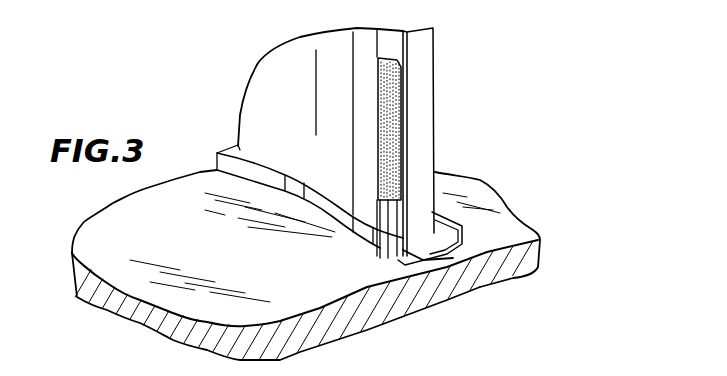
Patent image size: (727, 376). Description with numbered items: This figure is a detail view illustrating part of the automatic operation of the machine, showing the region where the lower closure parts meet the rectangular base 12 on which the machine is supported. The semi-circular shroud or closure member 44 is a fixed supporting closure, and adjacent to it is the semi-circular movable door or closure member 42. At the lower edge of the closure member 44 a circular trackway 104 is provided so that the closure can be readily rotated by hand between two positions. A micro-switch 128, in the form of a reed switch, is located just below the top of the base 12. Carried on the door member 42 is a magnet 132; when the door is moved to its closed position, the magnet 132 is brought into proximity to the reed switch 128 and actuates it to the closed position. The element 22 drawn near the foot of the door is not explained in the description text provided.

The floor slab 12 is at (538, 240).
The base flange 22 is at (400, 268).
The wall panel 42 is at (431, 127).
The panel edge cap 44 is at (433, 41).
The base channel 104 is at (443, 227).
The floor front edge 128 is at (447, 268).
The sealing strip 132 is at (403, 88).